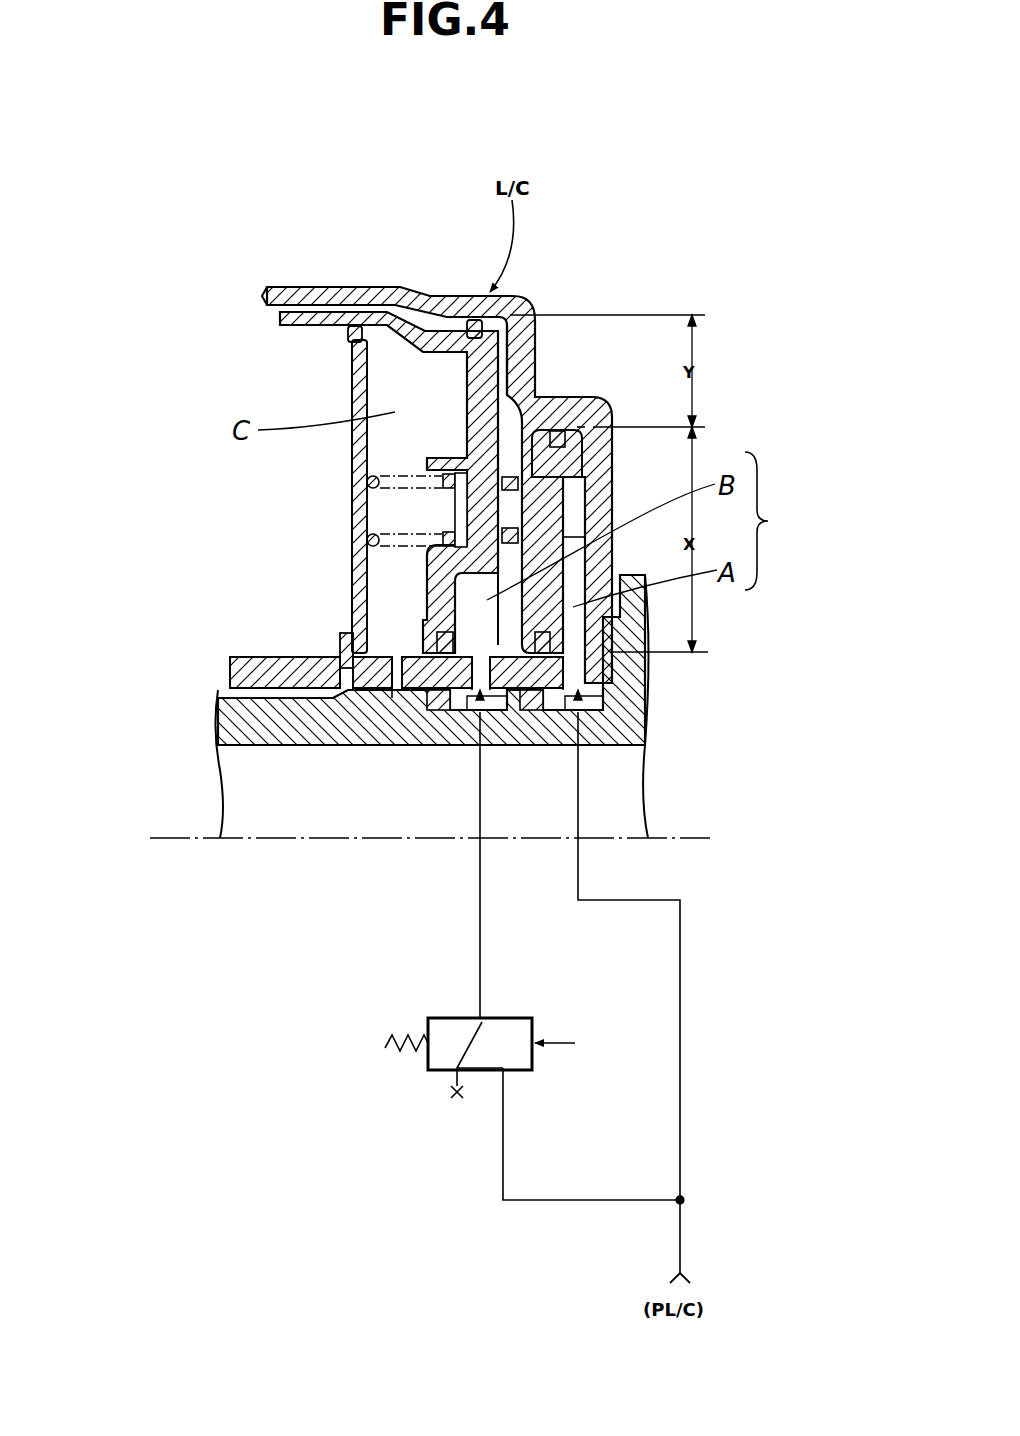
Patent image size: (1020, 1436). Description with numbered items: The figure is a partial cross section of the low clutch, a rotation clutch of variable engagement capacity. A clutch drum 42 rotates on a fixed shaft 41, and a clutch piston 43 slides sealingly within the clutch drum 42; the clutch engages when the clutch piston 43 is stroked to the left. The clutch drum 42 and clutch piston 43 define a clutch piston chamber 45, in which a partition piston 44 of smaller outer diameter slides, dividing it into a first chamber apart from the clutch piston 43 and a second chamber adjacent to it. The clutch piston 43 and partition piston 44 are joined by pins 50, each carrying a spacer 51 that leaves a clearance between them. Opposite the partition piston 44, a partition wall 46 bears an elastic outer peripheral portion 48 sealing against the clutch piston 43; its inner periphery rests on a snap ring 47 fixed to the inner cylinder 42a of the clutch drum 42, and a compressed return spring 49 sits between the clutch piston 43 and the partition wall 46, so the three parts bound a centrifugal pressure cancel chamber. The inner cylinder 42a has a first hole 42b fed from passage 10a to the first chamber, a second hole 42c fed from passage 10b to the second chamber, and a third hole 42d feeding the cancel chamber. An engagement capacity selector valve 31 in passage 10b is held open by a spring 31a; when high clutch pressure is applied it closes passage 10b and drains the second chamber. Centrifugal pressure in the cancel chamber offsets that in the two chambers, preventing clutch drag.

The fixed shaft 41 is at (240, 720).
The clutch drum 42 is at (397, 296).
The inner cylinder 42a is at (250, 657).
The first hole 42b is at (573, 670).
The second hole 42c is at (468, 692).
The third hole 42d is at (393, 692).
The clutch piston 43 is at (340, 312).
The partition piston 44 is at (570, 447).
The clutch piston chamber 45 is at (825, 540).
The partition wall 46 is at (355, 520).
The snap ring 47 is at (343, 633).
The outer peripheral portion 48 is at (345, 338).
The return spring 49 is at (370, 458).
The pins 50 is at (527, 420).
The spacer 51 is at (507, 440).
The passage 10a is at (680, 972).
The passage 10b is at (480, 953).
The engagement capacity selector valve 31 is at (428, 1065).
The spring 31a is at (395, 1040).